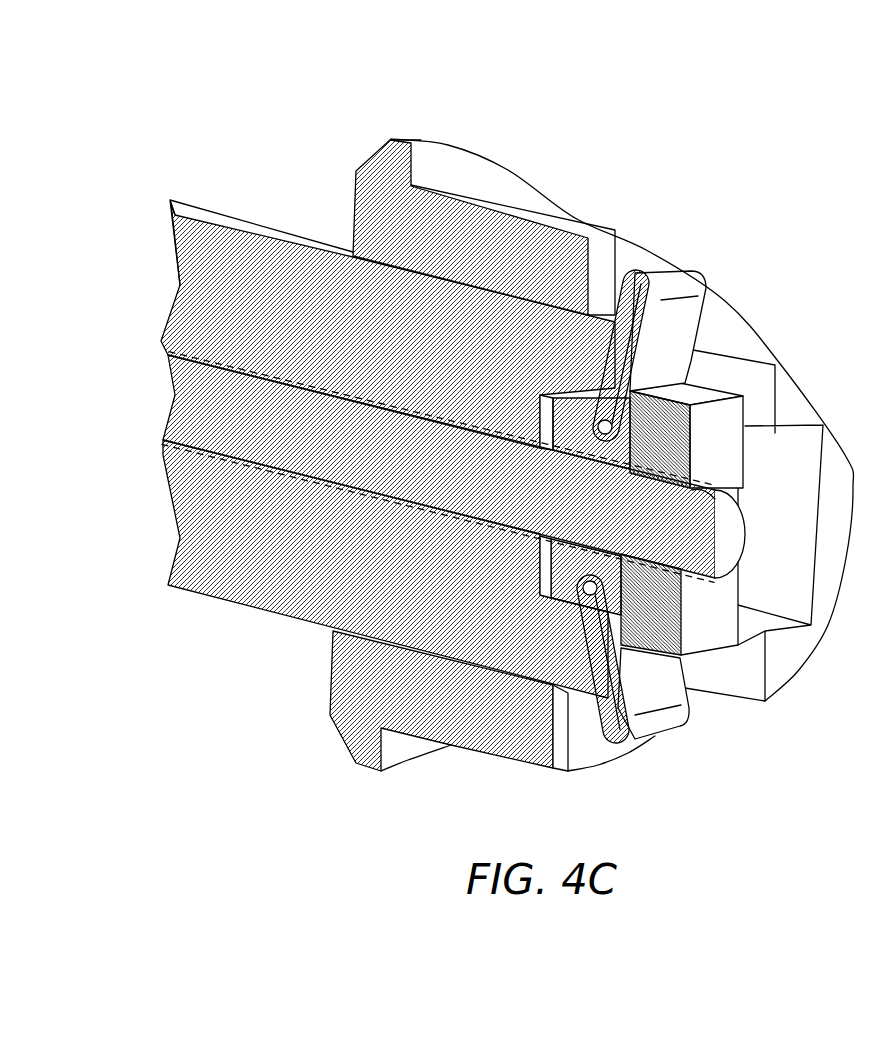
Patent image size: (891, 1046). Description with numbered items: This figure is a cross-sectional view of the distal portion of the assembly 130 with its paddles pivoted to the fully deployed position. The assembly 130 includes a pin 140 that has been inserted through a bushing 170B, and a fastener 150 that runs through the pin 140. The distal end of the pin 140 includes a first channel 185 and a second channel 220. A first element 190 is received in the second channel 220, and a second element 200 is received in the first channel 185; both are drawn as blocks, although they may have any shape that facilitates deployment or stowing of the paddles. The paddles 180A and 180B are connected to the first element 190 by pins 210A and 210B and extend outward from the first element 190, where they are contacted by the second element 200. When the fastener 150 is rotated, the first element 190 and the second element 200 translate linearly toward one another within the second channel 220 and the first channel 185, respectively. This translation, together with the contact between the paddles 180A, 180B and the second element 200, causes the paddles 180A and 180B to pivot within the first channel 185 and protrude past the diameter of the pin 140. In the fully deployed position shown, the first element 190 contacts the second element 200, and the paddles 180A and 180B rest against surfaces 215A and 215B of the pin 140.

The assembly 130 is at (206, 178).
The pin 140 is at (195, 556).
The fastener 150 is at (190, 401).
The bushing 170B is at (518, 732).
The paddle 180A is at (658, 308).
The paddle 180B is at (655, 713).
The first channel 185 is at (742, 370).
The first element 190 is at (532, 387).
The second element 200 is at (660, 453).
The pin 210A is at (628, 264).
The pin 210B is at (605, 735).
The surface 215A is at (585, 373).
The surface 215B is at (557, 598).
The second channel 220 is at (796, 567).